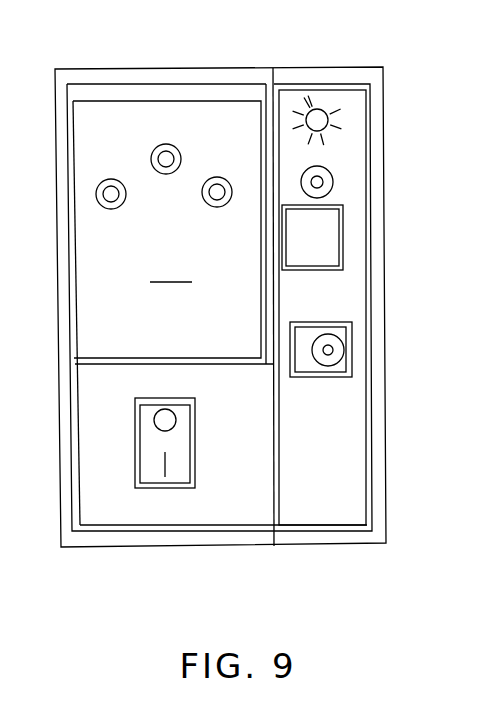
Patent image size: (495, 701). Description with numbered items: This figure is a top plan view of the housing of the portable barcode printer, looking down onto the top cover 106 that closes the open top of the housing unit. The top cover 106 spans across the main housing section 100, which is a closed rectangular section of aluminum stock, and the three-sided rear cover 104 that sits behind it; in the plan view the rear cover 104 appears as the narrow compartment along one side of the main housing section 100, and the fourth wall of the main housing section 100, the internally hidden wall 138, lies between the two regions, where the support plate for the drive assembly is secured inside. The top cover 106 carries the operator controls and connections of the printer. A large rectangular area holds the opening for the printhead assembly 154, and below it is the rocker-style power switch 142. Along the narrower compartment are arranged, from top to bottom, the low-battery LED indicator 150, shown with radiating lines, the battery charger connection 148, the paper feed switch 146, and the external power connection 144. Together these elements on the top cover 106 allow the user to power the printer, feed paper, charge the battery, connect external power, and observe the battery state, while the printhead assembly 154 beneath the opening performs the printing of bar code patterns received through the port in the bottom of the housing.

The main housing section 100 is at (156, 552).
The rear cover 104 is at (389, 533).
The top cover 106 is at (345, 491).
The internally hidden wall 138 is at (266, 162).
The power switch 142 is at (176, 444).
The external power connection 144 is at (310, 363).
The paper feed switch 146 is at (317, 252).
The battery charger connection 148 is at (328, 182).
The low-battery LED indicator 150 is at (316, 113).
The printhead assembly 154 is at (171, 270).